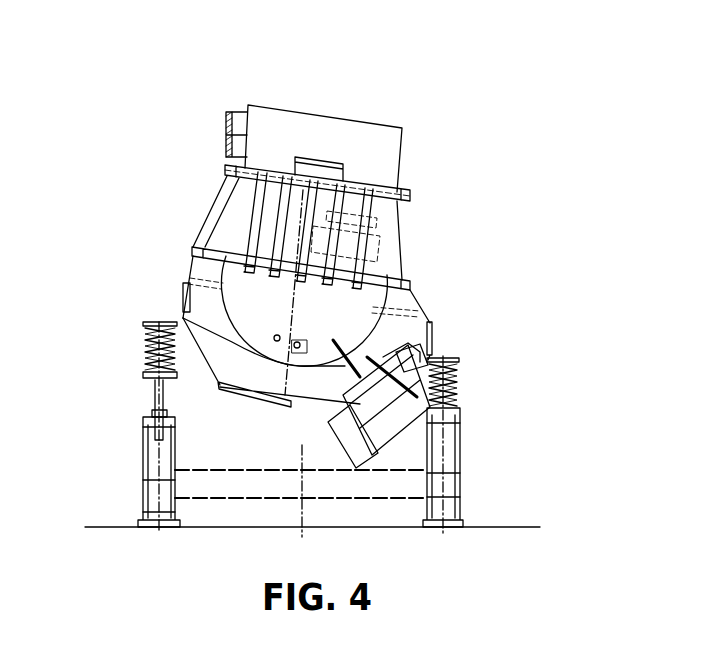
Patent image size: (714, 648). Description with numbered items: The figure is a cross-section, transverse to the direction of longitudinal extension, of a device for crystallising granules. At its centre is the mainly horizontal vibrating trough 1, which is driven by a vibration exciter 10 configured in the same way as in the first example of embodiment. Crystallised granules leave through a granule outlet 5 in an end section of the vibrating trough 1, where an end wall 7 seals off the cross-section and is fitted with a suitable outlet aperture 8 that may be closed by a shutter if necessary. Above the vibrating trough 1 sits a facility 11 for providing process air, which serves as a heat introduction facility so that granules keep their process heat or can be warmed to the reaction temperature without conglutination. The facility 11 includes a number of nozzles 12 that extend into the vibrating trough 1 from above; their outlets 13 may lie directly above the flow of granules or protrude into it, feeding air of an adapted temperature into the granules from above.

The vibrating trough 1 is at (458, 423).
The granule outlet 5 is at (350, 340).
The end wall 7 is at (410, 283).
The outlet aperture 8 is at (350, 340).
The vibration exciter 10 is at (414, 364).
The facility for providing process air 11 is at (280, 117).
The nozzles 12 is at (253, 203).
The outlets 13 is at (186, 289).